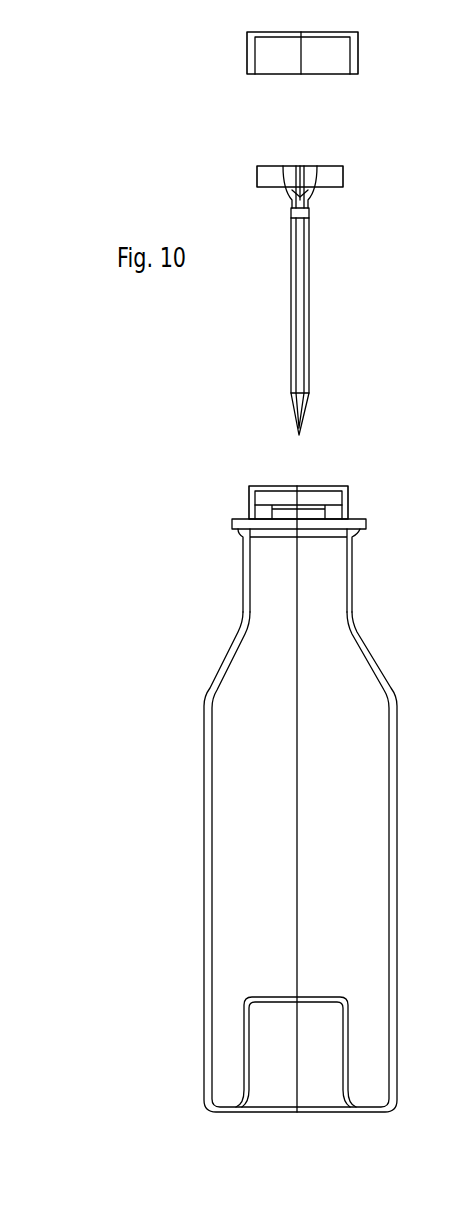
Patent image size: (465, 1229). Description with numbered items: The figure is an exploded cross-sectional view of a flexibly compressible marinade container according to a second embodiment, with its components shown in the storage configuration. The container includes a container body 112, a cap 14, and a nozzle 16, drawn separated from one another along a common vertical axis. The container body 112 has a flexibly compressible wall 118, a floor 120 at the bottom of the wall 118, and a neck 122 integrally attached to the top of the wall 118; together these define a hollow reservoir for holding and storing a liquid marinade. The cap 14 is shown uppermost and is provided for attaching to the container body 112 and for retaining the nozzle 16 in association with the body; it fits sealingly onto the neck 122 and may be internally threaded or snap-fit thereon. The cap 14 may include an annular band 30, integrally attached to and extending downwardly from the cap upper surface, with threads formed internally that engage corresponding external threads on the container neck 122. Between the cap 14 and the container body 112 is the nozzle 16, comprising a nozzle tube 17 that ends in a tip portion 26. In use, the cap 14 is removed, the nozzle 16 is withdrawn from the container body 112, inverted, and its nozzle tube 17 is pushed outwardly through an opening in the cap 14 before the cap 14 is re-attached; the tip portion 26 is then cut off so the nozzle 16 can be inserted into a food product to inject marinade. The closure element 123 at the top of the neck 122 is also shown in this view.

The cap 14 is at (274, 85).
The annular band 30 is at (358, 55).
The nozzle 16 is at (259, 303).
The nozzle tube 17 is at (309, 300).
The tip portion 26 is at (303, 402).
The container body 112 is at (217, 829).
The bottle closure cap 123 is at (249, 502).
The neck 122 is at (243, 570).
The flexibly compressible wall 118 is at (204, 830).
The floor 120 is at (272, 1113).